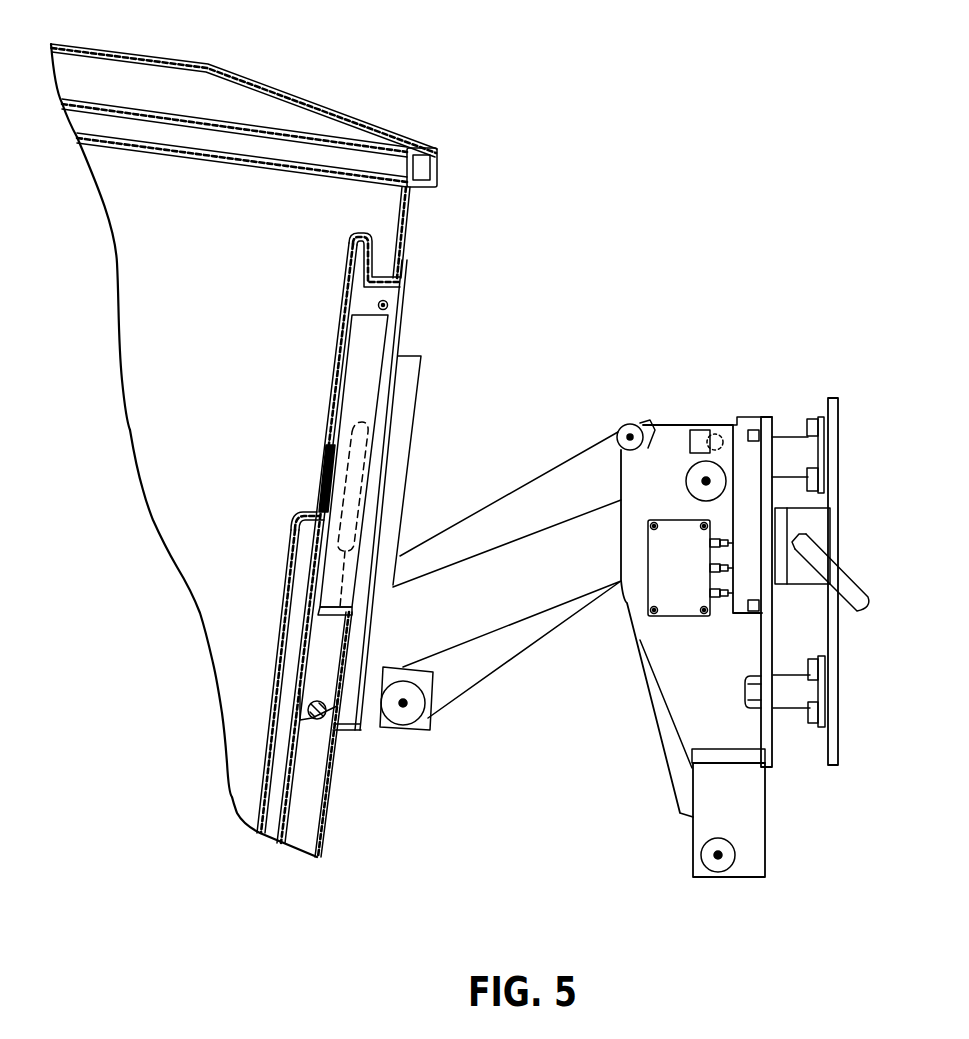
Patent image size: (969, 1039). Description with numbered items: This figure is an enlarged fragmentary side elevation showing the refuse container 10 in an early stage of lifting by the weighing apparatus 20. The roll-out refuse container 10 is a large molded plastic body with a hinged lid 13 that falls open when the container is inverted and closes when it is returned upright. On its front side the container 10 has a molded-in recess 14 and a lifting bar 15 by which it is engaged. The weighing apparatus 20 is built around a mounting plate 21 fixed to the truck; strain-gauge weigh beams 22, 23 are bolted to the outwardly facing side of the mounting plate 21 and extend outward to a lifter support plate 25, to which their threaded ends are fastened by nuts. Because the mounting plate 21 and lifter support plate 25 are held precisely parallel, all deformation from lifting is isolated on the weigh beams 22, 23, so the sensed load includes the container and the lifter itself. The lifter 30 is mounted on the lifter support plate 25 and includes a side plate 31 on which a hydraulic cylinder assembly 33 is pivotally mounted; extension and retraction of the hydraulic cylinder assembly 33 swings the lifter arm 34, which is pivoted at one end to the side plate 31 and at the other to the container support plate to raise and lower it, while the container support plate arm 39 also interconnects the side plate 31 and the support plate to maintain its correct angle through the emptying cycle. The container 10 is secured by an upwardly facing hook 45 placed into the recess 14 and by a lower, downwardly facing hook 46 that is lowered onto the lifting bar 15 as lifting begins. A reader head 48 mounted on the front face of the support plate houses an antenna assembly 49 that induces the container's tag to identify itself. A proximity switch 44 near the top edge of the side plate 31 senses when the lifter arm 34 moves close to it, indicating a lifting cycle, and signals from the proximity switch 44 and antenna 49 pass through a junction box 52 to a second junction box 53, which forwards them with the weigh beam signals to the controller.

The roll-out refuse container 10 is at (472, 142).
The lid 13 is at (185, 82).
The molded-in recess 14 is at (372, 242).
The lifting bar 15 is at (331, 731).
The weighing apparatus 20 is at (823, 852).
The mounting plate 21 is at (836, 459).
The weigh beam 22 is at (786, 447).
The weigh beam 23 is at (793, 704).
The lifter support plate 25 is at (770, 637).
The lifter 30 is at (455, 856).
The side plate 31 is at (705, 674).
The hydraulic cylinder assembly 33 is at (678, 758).
The lifter arm 34 is at (513, 641).
The container support plate arm 39 is at (535, 489).
The proximity switch 44 is at (703, 426).
The upwardly facing hook 45 is at (352, 268).
The downwardly facing hook 46 is at (300, 643).
The reader head 48 is at (346, 343).
The antenna assembly 49 is at (350, 455).
The junction box 52 is at (689, 574).
The junction box 53 is at (813, 524).